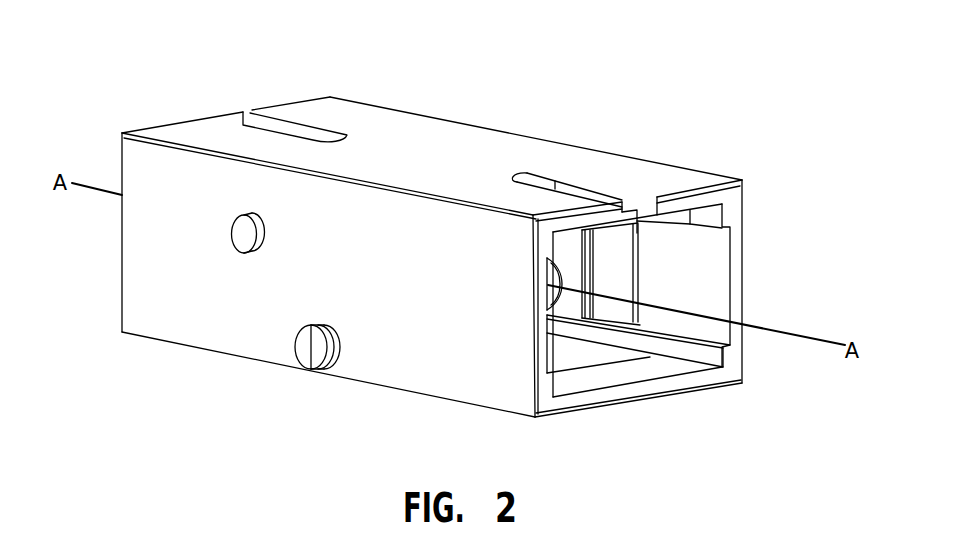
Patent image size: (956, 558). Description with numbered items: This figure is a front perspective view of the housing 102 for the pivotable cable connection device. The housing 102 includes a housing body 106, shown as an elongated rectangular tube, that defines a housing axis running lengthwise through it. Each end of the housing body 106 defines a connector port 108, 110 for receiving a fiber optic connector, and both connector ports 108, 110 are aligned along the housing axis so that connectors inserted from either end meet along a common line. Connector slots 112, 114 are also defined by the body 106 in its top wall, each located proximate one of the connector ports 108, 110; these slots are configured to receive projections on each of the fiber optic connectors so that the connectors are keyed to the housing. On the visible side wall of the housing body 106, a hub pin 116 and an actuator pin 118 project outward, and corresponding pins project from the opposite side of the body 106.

The housing 102 is at (677, 58).
The housing body 106 is at (468, 145).
The connector port 108 is at (175, 124).
The connector port 110 is at (697, 272).
The connector slot 112 is at (288, 130).
The connector slot 114 is at (627, 210).
The hub pin 116 is at (313, 378).
The actuator pin 118 is at (243, 265).